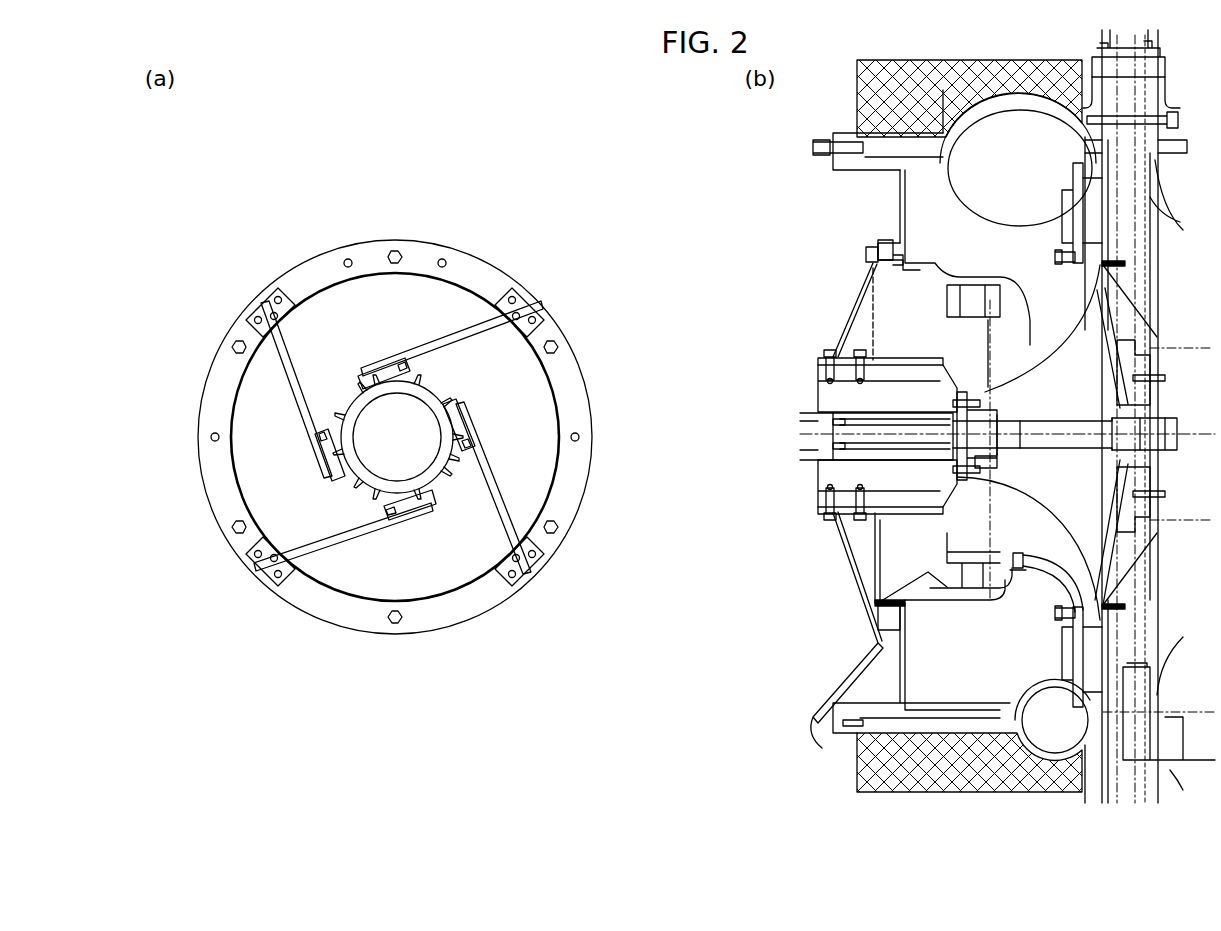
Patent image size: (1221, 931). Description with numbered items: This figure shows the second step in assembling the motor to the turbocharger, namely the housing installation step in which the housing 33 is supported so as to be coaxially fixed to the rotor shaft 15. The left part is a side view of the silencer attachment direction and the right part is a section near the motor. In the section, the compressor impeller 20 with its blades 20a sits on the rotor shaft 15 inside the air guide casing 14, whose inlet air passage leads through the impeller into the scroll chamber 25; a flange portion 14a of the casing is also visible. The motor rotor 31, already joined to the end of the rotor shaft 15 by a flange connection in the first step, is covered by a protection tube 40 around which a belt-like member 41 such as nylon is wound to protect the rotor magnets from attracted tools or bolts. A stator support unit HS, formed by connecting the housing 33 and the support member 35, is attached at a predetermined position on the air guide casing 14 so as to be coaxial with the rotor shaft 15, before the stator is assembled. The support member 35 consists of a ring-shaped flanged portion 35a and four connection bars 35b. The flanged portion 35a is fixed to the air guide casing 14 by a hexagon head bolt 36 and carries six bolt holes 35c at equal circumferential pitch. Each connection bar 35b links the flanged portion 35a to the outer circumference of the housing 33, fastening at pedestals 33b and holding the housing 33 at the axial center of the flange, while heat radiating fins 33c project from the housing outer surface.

The air guide casing 14 is at (1015, 553).
The casing flange portion 14a is at (905, 257).
The rotor shaft 15 is at (1145, 430).
The compressor impeller 20 is at (1008, 386).
The blades 20a is at (1060, 352).
The scroll chamber 25 is at (1052, 760).
The motor rotor 31 is at (850, 478).
The housing 33 is at (445, 480).
The pedestals 33b is at (386, 362).
The heat radiating fins 33c is at (447, 393).
The support member 35 is at (596, 370).
The flanged portion 35a is at (575, 405).
The connection bars 35b is at (440, 352).
The bolt holes 35c is at (882, 238).
The hexagon head bolt 36 is at (396, 249).
The protection tube 40 is at (800, 438).
The belt-like member 41 is at (835, 455).
The stator support unit HS is at (503, 222).